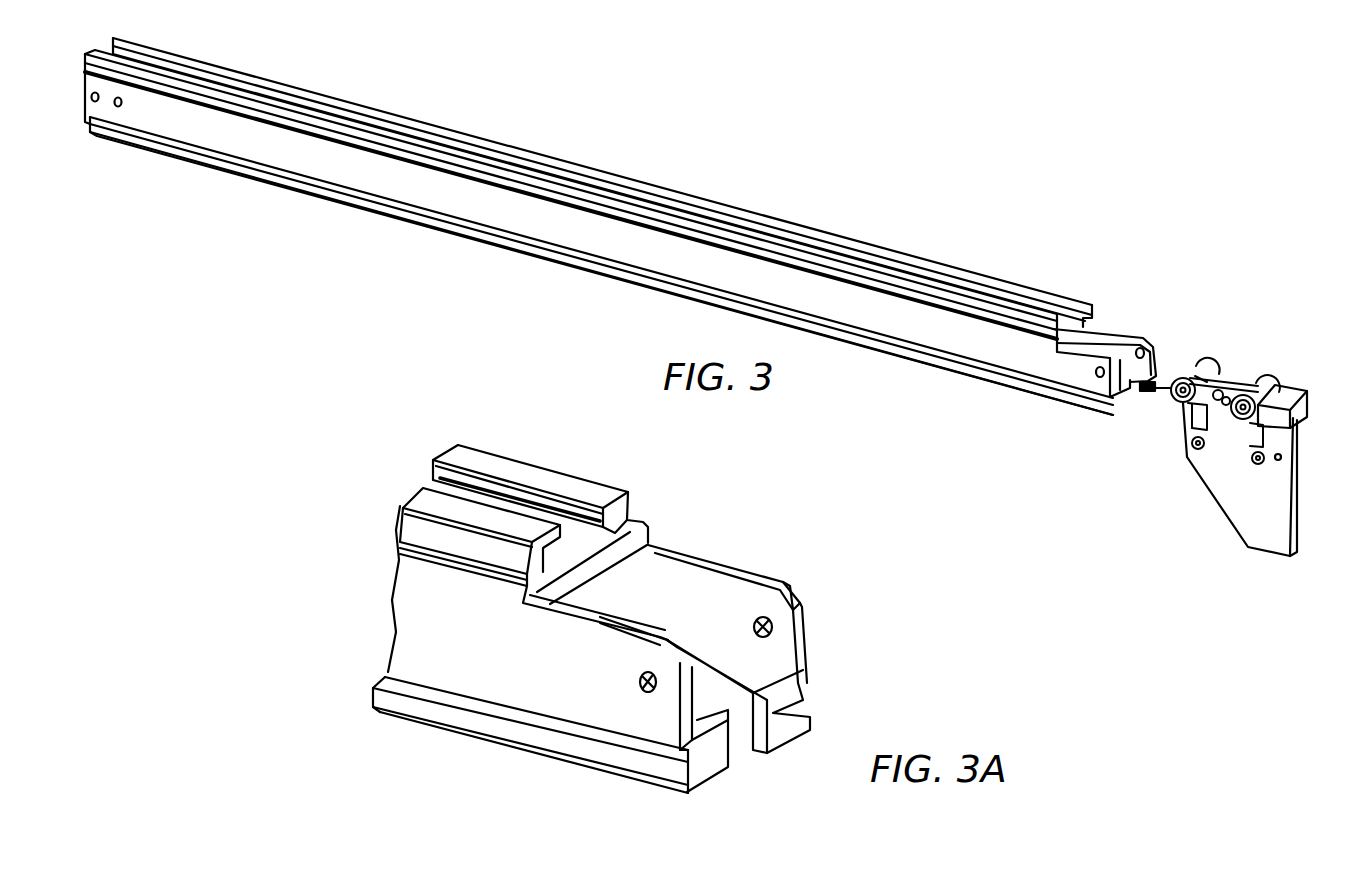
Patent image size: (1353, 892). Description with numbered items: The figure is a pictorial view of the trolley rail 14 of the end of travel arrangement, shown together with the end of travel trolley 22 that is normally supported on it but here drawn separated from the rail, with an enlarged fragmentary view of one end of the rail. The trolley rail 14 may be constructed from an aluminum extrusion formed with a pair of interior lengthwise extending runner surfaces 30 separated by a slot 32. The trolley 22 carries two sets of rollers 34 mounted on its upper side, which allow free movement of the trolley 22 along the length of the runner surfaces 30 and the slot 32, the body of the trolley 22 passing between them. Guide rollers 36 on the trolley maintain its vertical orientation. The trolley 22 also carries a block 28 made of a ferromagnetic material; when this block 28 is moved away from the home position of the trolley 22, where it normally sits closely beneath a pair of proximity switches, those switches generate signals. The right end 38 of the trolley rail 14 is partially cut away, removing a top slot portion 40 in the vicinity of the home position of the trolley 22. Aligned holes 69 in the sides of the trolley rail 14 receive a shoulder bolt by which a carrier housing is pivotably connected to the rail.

In FIG. 3, the trolley rail 14 is at (346, 189).
In FIG. 3A, the trolley rail 14 is at (408, 651).
In FIG. 3, the top slot portion 40 is at (930, 261).
In FIG. 3A, the top slot portion 40 is at (503, 517).
In FIG. 3, the right end 38 is at (1110, 325).
In FIG. 3A, the right end 38 is at (682, 550).
In FIG. 3, the rollers 34 is at (1183, 378).
In FIG. 3, the guide rollers 36 is at (1192, 425).
In FIG. 3, the end of travel trolley 22 is at (1258, 530).
In FIG. 3, the block 28 is at (1294, 415).
In FIG. 3A, the aligned holes 69 is at (643, 696).
In FIG. 3A, the runner surfaces 30 is at (717, 687).
In FIG. 3A, the slot 32 is at (733, 738).